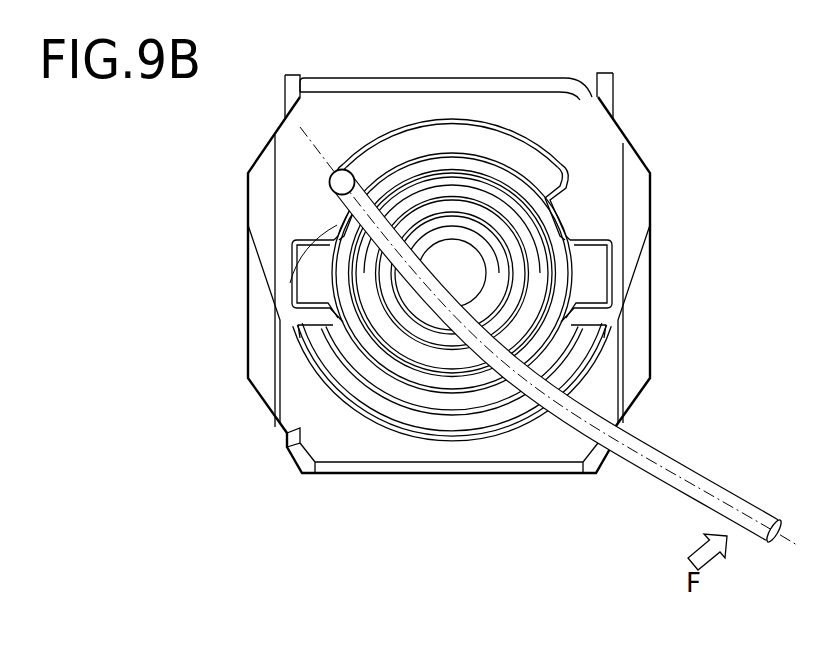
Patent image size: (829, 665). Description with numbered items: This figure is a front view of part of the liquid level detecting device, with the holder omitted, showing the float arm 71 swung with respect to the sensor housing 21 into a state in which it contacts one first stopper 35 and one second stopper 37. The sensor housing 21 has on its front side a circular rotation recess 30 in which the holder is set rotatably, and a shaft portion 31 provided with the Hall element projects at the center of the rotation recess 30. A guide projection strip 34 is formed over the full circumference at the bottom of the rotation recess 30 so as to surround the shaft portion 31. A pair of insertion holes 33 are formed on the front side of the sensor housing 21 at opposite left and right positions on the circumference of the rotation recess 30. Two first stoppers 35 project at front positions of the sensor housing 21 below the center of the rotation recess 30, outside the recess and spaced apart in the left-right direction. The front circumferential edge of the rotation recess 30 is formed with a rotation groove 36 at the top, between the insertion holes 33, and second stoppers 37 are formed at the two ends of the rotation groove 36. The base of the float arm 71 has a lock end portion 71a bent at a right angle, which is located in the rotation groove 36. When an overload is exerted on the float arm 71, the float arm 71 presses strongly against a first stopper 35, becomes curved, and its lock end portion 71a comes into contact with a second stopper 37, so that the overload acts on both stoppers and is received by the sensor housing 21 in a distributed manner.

The sensor housing 21 is at (643, 153).
The rotation recess 30 is at (468, 388).
The shaft portion 31 is at (515, 290).
The insertion holes 33 is at (290, 283).
The guide projection strip 34 is at (400, 370).
The first stoppers 35 is at (317, 377).
The rotation groove 36 is at (478, 140).
The second stoppers 37 is at (553, 161).
The float arm 71 is at (690, 462).
The lock end portion 71a is at (352, 172).